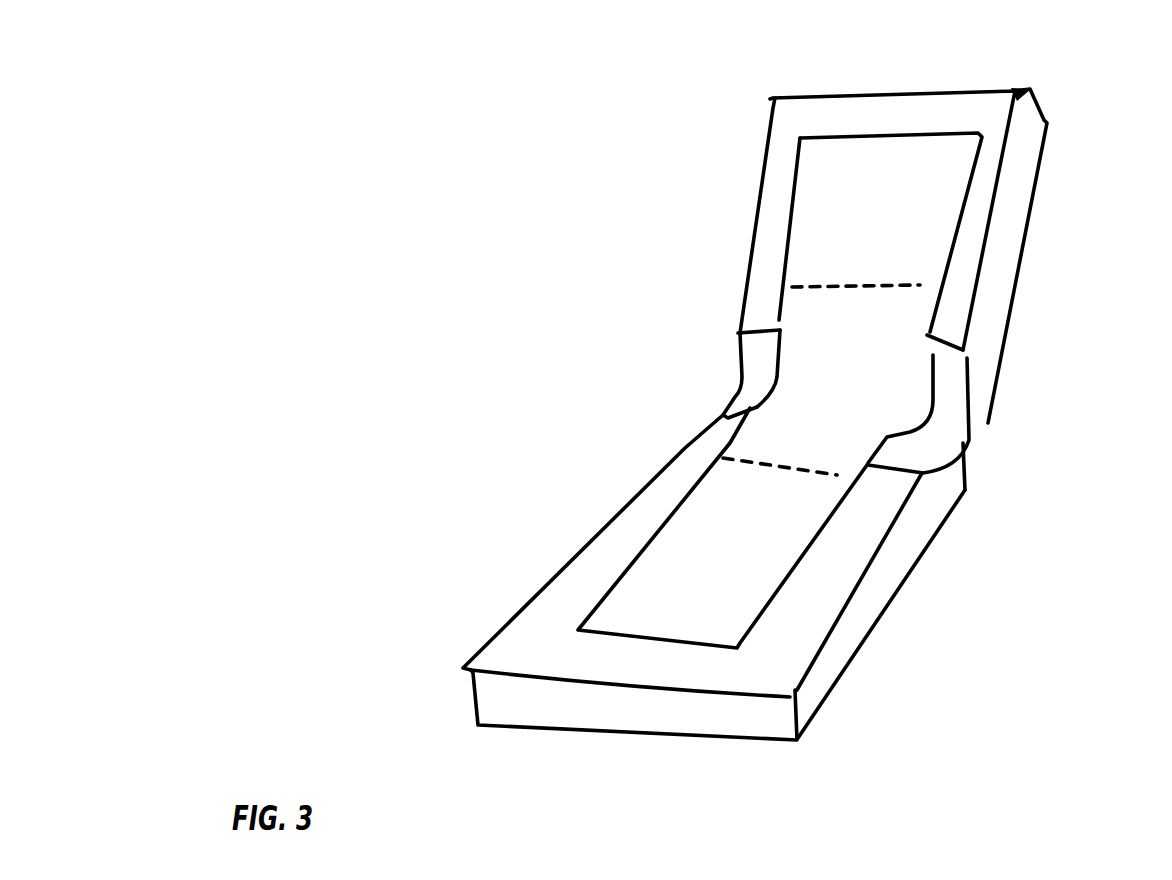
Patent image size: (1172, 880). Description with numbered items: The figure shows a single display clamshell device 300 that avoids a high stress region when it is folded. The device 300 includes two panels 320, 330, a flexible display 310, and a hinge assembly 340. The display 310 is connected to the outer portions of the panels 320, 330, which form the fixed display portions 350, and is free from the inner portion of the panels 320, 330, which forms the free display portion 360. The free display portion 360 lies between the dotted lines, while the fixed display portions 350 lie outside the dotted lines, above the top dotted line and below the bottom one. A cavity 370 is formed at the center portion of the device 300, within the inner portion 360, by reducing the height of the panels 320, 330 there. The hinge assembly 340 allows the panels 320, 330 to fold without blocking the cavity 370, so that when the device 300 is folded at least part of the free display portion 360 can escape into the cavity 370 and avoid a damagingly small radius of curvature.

The clamshell device 300 is at (483, 152).
The flexible display 310 is at (927, 128).
The panel 320 is at (762, 157).
The panel 330 is at (615, 507).
The hinge assembly 340 is at (967, 437).
The fixed display portion 350 is at (943, 223).
The free display portion 360 is at (817, 378).
The cavity 370 is at (967, 400).